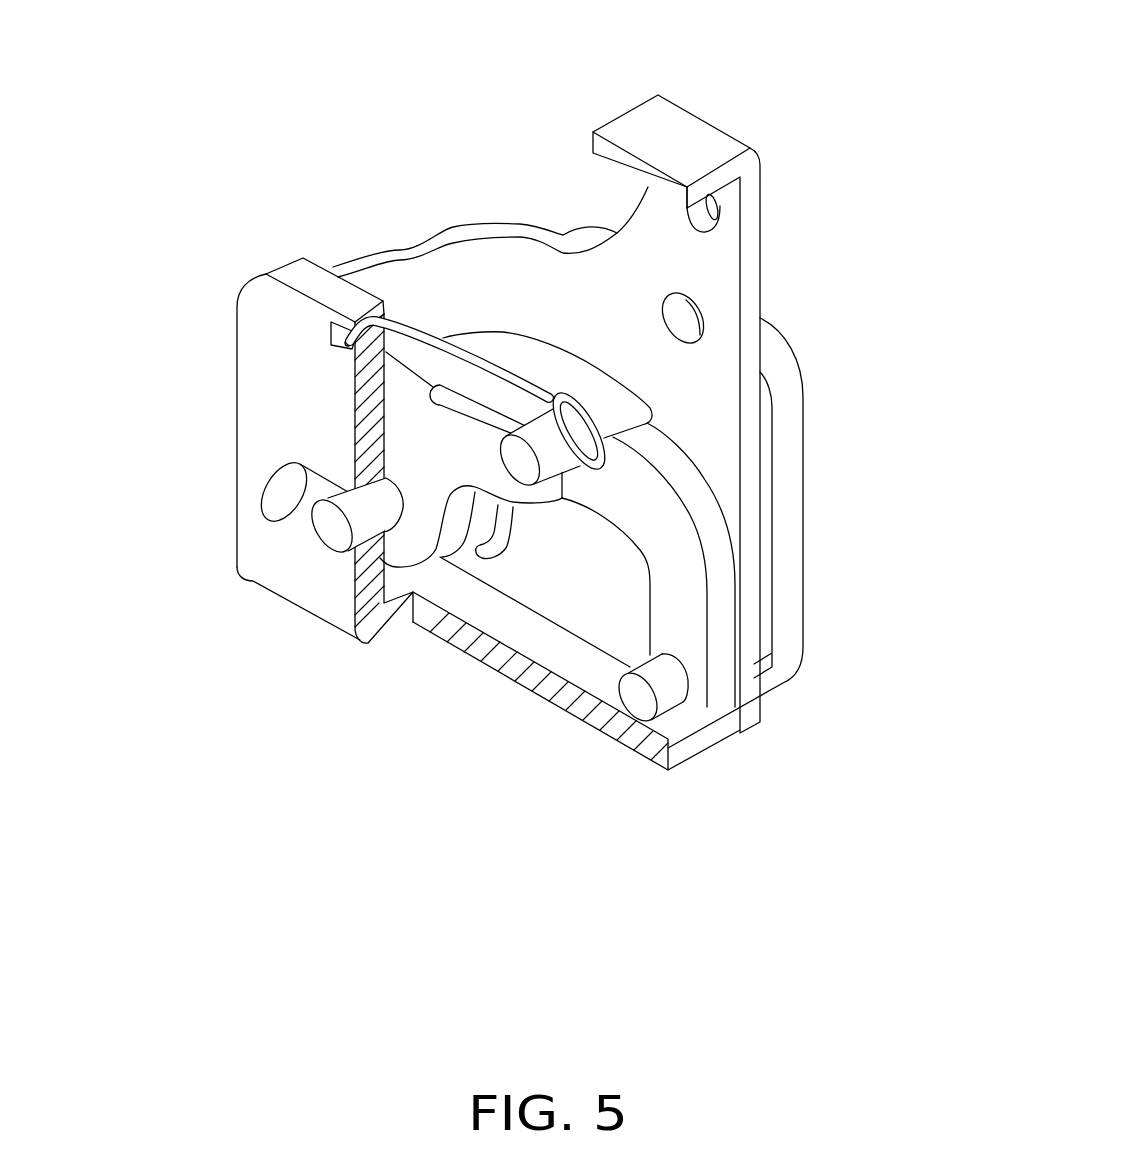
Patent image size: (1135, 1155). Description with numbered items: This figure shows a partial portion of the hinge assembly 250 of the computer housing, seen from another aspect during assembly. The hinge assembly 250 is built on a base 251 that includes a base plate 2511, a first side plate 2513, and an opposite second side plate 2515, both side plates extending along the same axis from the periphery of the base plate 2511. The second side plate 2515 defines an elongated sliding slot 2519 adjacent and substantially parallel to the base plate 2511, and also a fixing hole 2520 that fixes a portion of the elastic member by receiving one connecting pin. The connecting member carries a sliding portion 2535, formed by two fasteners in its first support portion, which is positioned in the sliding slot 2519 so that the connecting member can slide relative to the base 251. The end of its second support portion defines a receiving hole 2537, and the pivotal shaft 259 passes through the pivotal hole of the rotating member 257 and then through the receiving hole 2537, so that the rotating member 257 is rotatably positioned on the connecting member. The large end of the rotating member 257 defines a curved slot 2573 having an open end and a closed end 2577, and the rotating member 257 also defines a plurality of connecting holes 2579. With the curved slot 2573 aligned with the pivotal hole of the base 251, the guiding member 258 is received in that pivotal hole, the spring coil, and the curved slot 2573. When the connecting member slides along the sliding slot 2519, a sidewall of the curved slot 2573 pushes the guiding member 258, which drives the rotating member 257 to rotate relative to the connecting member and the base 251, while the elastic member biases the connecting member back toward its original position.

The hinge assembly 250 is at (746, 60).
The base 251 is at (307, 280).
The base plate 2511 is at (543, 640).
The first side plate 2513 is at (783, 518).
The second side plate 2515 is at (277, 423).
The sliding slot 2519 is at (310, 517).
The fixing hole 2520 is at (347, 337).
The sliding portion 2535 is at (340, 541).
The receiving hole 2537 is at (665, 693).
The rotating member 257 is at (710, 257).
The curved slot 2573 is at (494, 354).
The closed end 2577 is at (663, 442).
The connecting holes 2579 is at (680, 328).
The guiding member 258 is at (523, 463).
The pivotal shaft 259 is at (643, 695).